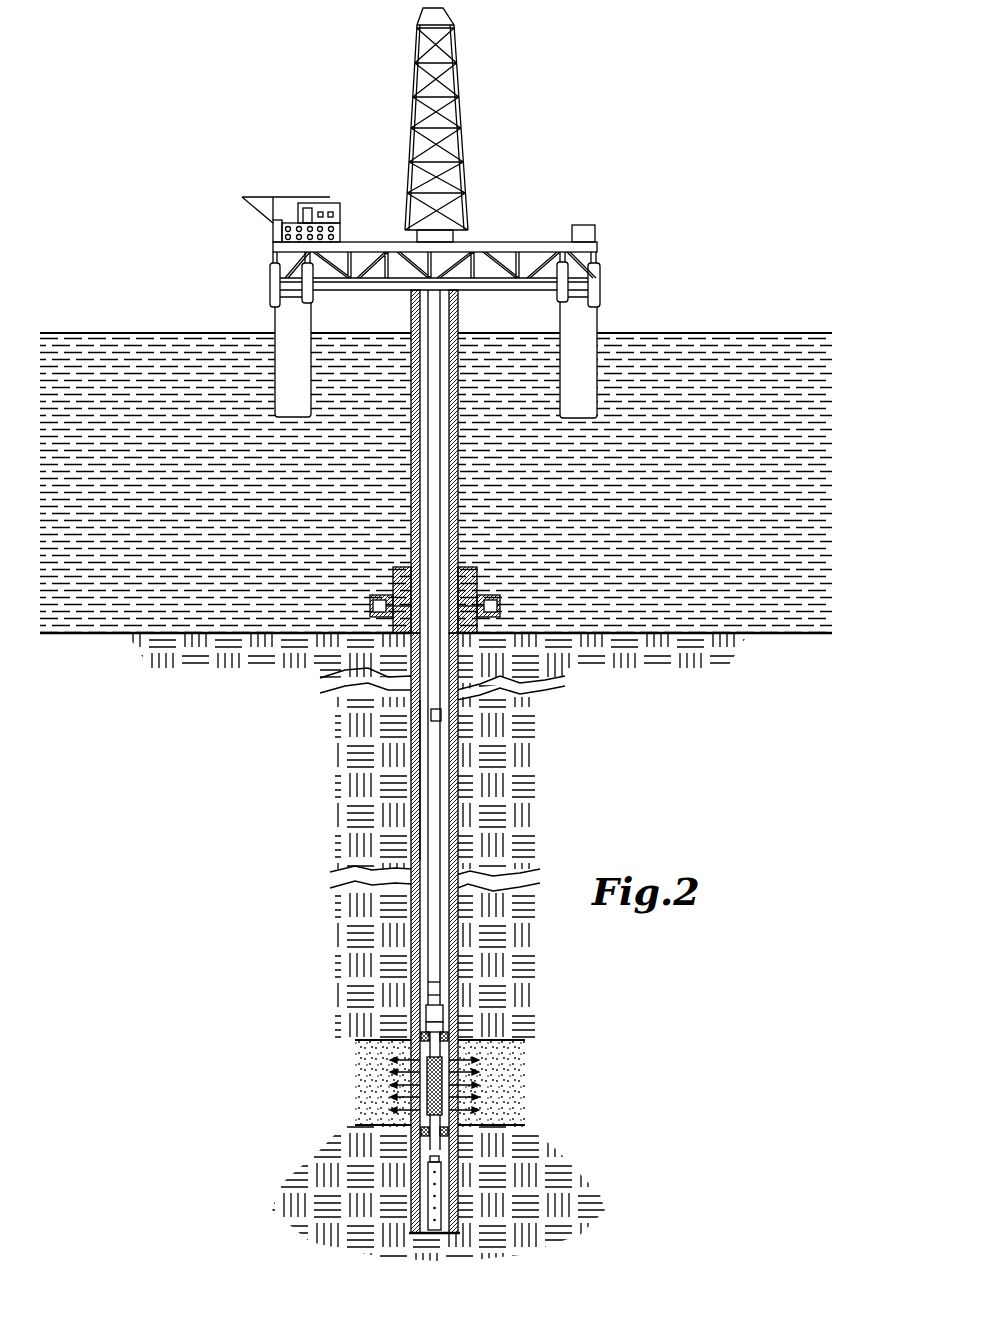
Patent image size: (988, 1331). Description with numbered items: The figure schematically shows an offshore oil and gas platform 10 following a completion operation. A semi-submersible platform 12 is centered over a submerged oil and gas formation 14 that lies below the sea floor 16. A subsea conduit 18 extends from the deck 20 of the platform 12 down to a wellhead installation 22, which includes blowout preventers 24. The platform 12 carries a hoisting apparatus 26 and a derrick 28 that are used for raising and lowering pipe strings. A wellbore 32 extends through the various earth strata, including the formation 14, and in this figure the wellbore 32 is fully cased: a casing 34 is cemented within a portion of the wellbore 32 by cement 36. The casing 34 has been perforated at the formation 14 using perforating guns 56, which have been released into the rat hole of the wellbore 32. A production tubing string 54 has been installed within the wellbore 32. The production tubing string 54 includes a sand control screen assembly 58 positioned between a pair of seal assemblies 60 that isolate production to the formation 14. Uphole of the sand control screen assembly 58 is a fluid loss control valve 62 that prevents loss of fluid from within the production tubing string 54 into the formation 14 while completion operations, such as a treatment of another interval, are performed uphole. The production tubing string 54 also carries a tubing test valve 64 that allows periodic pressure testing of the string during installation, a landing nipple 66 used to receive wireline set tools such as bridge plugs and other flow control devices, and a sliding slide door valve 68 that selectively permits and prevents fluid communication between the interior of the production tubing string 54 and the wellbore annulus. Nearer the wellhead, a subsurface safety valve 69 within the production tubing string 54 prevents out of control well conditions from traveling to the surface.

The offshore oil and gas platform 10 is at (595, 191).
The semi-submersible platform 12 is at (547, 250).
The oil and gas formation 14 is at (523, 1092).
The sea floor 16 is at (673, 634).
The subsea conduit 18 is at (413, 466).
The deck 20 is at (543, 283).
The wellhead installation 22 is at (478, 585).
The blowout preventers 24 is at (500, 605).
The hoisting apparatus 26 is at (437, 213).
The derrick 28 is at (456, 47).
The wellbore 32 is at (412, 776).
The casing 34 is at (415, 812).
The cement 36 is at (415, 858).
The production tubing string 54 is at (441, 503).
The perforating guns 56 is at (428, 1183).
The sand control screen assembly 58 is at (428, 1100).
The seal assemblies 60 is at (422, 1135).
The fluid loss control valve 62 is at (446, 1030).
The tubing test valve 64 is at (426, 1020).
The landing nipple 66 is at (444, 1000).
The sliding slide door valve 68 is at (426, 1000).
The safety valve 69 is at (441, 716).